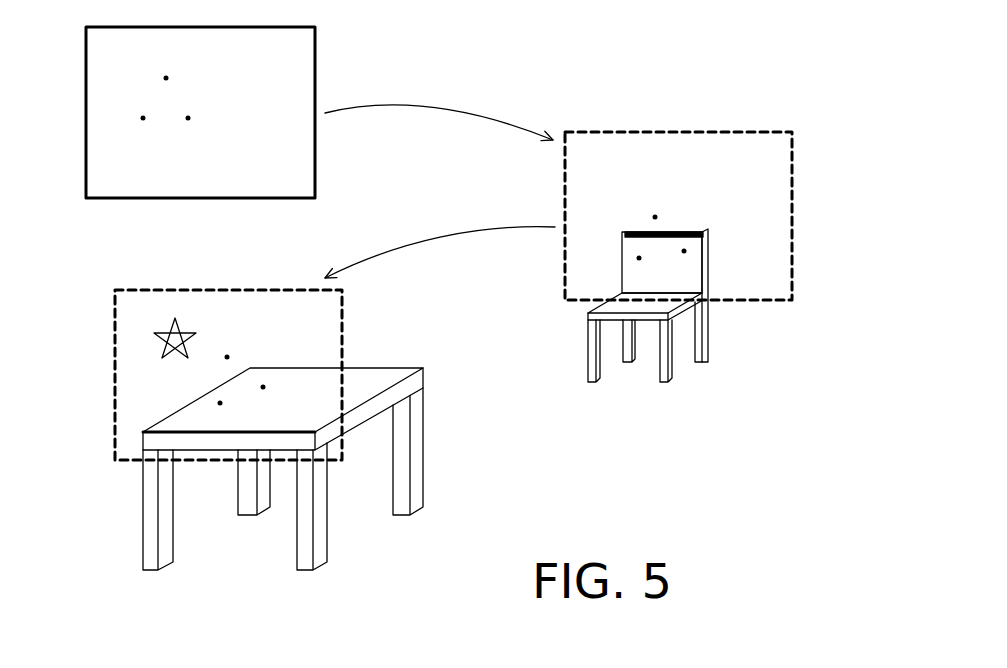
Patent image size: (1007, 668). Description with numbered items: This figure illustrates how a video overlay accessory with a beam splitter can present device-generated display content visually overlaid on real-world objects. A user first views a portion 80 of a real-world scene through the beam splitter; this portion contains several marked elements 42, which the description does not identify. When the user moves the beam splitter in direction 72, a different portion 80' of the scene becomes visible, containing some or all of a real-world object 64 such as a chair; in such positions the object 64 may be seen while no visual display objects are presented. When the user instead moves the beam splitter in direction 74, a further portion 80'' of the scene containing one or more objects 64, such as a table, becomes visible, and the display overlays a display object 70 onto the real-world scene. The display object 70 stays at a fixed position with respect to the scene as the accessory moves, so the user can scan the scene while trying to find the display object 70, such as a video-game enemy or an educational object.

The portion of real-world scene 80 is at (225, 112).
The portion of real-world scene 80' is at (708, 216).
The portion of real-world scene 80'' is at (197, 375).
The landmark points 42 is at (188, 118).
The direction 72 is at (435, 107).
The direction 74 is at (427, 235).
The display object 70 is at (183, 333).
The real-world object 64 is at (707, 338).